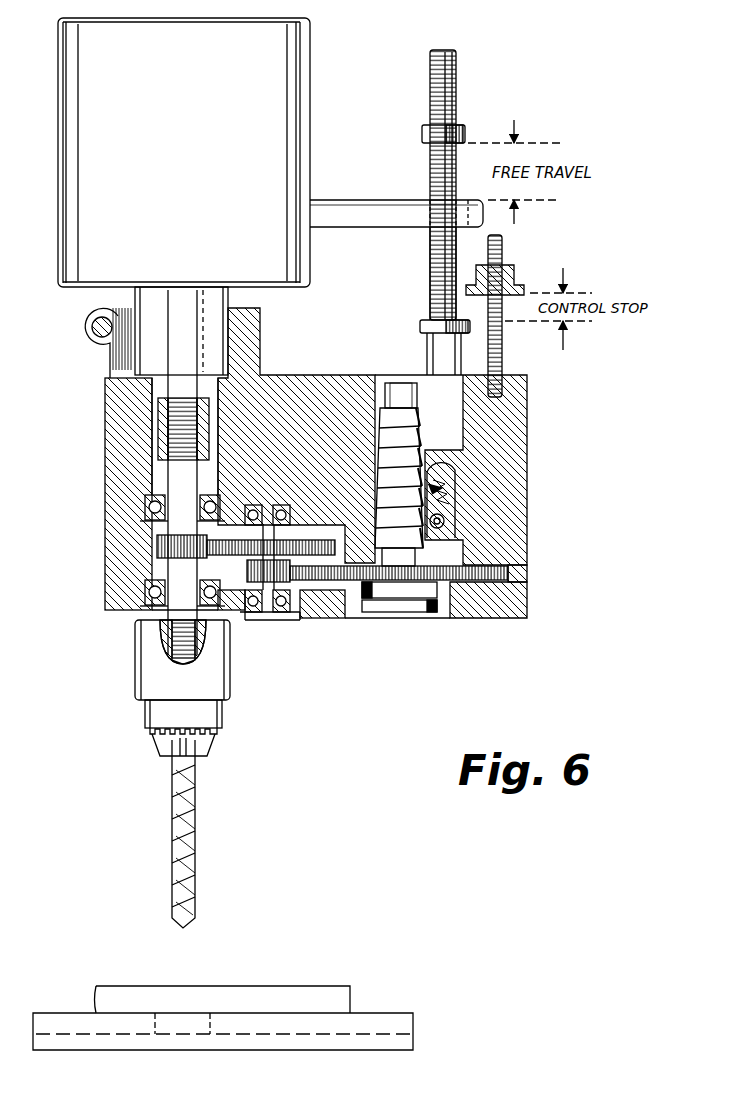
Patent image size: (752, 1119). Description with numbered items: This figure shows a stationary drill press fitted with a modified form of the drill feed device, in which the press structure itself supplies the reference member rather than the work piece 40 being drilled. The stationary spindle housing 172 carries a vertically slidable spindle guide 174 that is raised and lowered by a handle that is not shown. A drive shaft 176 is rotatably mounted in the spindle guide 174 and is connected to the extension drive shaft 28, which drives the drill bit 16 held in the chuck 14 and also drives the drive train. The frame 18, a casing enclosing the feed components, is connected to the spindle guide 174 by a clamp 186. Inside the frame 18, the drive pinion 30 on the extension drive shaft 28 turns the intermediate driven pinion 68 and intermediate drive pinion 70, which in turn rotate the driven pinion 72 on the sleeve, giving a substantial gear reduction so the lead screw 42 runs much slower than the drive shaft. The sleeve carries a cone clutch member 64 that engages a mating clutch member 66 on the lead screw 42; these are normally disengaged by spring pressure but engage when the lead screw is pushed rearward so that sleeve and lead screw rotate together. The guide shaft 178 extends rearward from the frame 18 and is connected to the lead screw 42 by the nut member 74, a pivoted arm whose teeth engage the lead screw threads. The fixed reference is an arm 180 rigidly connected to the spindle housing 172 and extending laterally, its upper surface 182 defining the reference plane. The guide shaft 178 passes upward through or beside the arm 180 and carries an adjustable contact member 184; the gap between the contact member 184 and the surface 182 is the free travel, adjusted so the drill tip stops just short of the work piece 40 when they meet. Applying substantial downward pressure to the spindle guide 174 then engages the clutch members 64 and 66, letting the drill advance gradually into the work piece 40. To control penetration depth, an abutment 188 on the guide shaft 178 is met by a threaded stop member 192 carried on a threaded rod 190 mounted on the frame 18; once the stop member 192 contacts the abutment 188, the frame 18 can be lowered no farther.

The chuck 14 is at (138, 667).
The drill bit 16 is at (195, 848).
The frame 18 is at (273, 372).
The extension drive shaft 28 is at (158, 528).
The drive pinion 30 is at (157, 552).
The workpiece 40 is at (348, 990).
The lead screw 42 is at (448, 486).
The cone clutch member 64 is at (427, 588).
The clutch member 66 is at (377, 600).
The intermediate driven pinion 68 is at (330, 560).
The intermediate drive pinion 70 is at (275, 582).
The driven pinion 72 is at (508, 578).
The nut member 74 is at (440, 478).
The spindle housing 172 is at (184, 152).
The spindle guide 174 is at (150, 357).
The drive shaft 176 is at (175, 398).
The guide shaft 178 is at (457, 78).
The arm 180 is at (354, 222).
The upper surface 182 is at (438, 200).
The contact member 184 is at (466, 128).
The clamp 186 is at (110, 338).
The abutment 188 is at (420, 327).
The threaded rod 190 is at (505, 352).
The stop member 192 is at (510, 265).